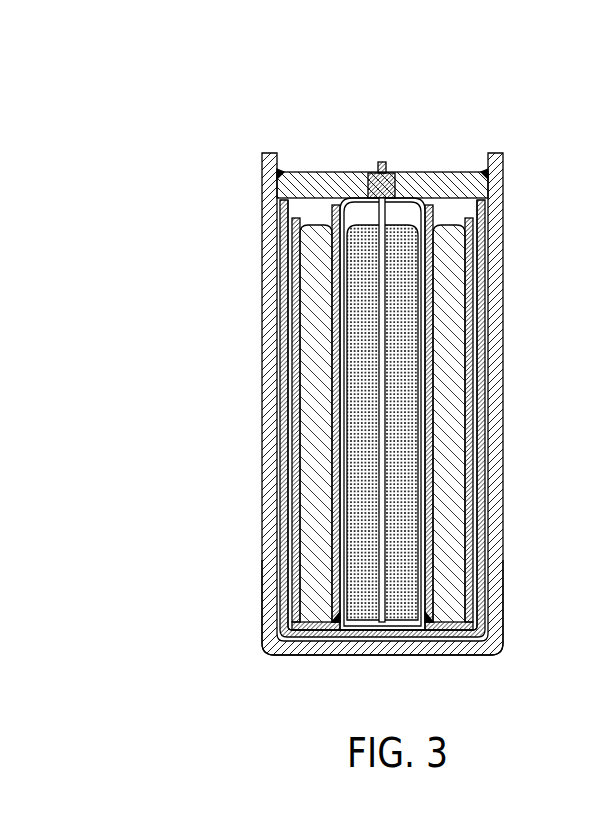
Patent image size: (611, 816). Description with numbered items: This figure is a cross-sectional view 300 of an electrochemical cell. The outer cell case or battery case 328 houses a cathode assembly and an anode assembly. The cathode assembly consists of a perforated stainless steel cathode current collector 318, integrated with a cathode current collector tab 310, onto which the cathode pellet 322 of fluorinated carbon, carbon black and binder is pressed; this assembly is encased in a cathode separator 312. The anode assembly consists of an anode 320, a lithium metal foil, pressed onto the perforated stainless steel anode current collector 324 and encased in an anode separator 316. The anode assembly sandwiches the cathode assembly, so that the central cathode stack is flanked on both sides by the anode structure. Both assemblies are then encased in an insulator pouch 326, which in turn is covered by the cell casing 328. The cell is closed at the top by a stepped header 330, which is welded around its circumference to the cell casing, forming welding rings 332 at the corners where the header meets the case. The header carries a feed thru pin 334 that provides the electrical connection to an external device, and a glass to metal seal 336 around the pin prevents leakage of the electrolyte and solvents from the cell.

The view of the electrochemical cell 300 is at (163, 107).
The cathode current collector tab 310 is at (349, 404).
The cathode separator 312 is at (283, 277).
The anode separator 316 is at (295, 334).
The cathode current collector 318 is at (316, 366).
The anode 320 is at (316, 440).
The cathode pellet 322 is at (336, 408).
The anode current collector 324 is at (345, 472).
The insulator pouch 326 is at (286, 528).
The cell case 328 is at (270, 585).
The stepped header 330 is at (420, 186).
The welding rings 332 is at (280, 172).
The feed thru pin 334 is at (370, 181).
The glass to metal seal 336 is at (384, 165).